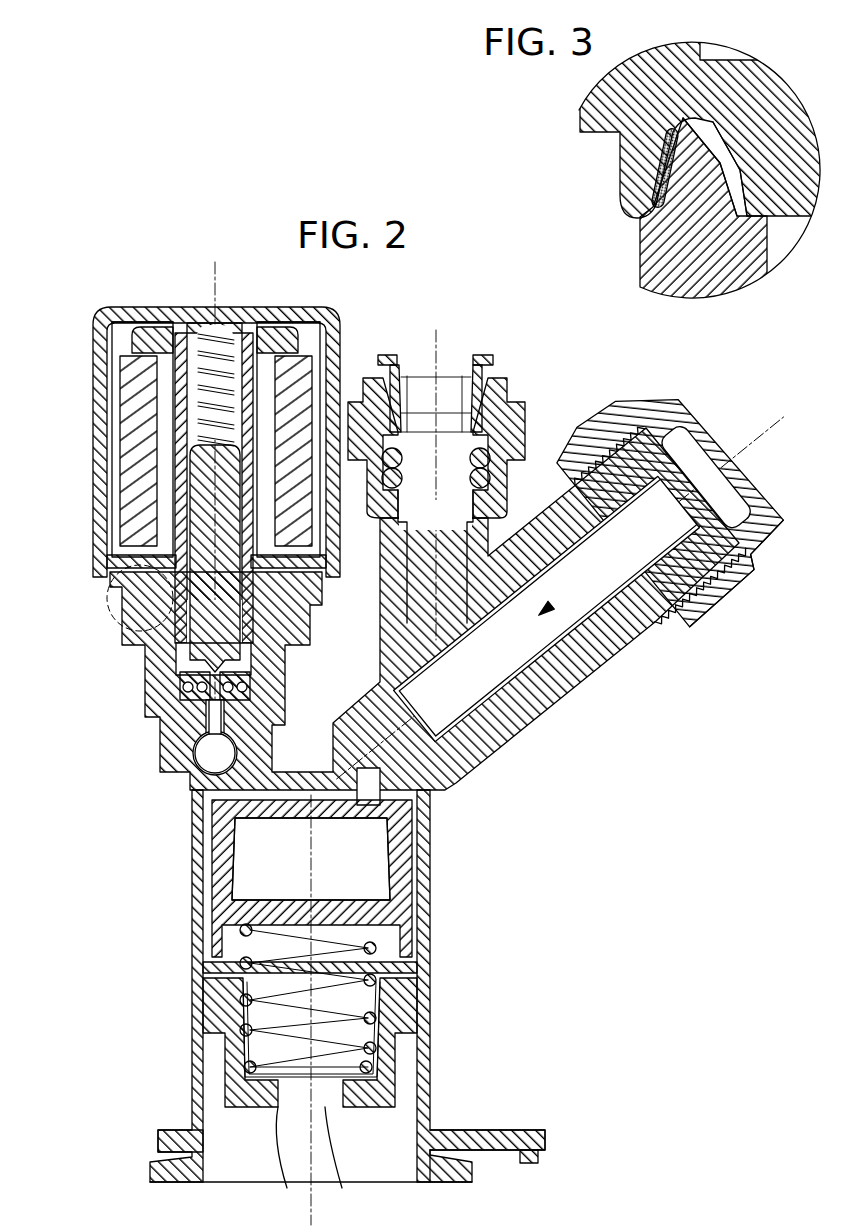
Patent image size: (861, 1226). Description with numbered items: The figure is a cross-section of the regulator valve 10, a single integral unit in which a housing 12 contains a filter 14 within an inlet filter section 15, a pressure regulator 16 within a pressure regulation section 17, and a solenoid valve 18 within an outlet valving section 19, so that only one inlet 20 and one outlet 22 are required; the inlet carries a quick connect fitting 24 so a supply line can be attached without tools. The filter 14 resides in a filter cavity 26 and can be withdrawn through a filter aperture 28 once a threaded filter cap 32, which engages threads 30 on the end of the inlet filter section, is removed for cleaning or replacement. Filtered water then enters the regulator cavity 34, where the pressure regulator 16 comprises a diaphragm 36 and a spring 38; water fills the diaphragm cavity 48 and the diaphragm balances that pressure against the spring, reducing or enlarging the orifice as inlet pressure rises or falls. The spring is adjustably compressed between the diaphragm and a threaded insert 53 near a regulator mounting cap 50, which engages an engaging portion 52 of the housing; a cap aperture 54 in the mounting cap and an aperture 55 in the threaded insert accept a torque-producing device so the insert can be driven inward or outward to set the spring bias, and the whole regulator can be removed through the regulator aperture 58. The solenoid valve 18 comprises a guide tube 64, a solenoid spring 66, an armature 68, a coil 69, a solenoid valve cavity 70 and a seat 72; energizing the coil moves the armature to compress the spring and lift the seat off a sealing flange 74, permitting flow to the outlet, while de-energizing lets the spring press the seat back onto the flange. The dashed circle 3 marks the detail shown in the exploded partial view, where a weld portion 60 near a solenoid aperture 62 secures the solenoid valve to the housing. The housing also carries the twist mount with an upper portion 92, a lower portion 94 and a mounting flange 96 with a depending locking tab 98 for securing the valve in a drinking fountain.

In FIG. 2, the detail view region of FIG. 3 is at (118, 613).
In FIG. 2, the regulator valve 10 is at (490, 252).
In FIG. 2, the housing 12 is at (554, 606).
In FIG. 2, the filter 14 is at (693, 479).
In FIG. 2, the inlet filter section 15 is at (554, 606).
In FIG. 2, the pressure regulator 16 is at (356, 1004).
In FIG. 2, the pressure regulation section 17 is at (368, 1004).
In FIG. 2, the solenoid valve 18 is at (300, 390).
In FIG. 3, the solenoid valve 18 is at (600, 108).
In FIG. 2, the outlet valving section 19 is at (190, 448).
In FIG. 2, the inlet 20 is at (453, 453).
In FIG. 2, the outlet 22 is at (195, 790).
In FIG. 2, the quick connect fitting 24 is at (487, 355).
In FIG. 2, the filter cavity 26 is at (582, 520).
In FIG. 2, the filter aperture 28 is at (706, 512).
In FIG. 2, the threads 30 is at (660, 620).
In FIG. 2, the threaded filter cap 32 is at (770, 523).
In FIG. 2, the regulator cavity 34 is at (408, 966).
In FIG. 2, the diaphragm 36 is at (299, 878).
In FIG. 2, the spring 38 is at (235, 960).
In FIG. 2, the diaphragm cavity 48 is at (360, 850).
In FIG. 2, the regulator mounting cap 50 is at (306, 1039).
In FIG. 2, the engaging portion 52 is at (425, 1000).
In FIG. 2, the threaded insert 53 is at (243, 985).
In FIG. 2, the cap aperture 54 is at (284, 1162).
In FIG. 2, the aperture 55 is at (339, 1162).
In FIG. 2, the regulator aperture 58 is at (420, 1140).
In FIG. 3, the weld portion 60 is at (658, 160).
In FIG. 3, the solenoid aperture 62 is at (692, 114).
In FIG. 2, the guide tube 64 is at (240, 335).
In FIG. 2, the solenoid spring 66 is at (181, 330).
In FIG. 2, the armature 68 is at (210, 500).
In FIG. 2, the coil 69 is at (137, 425).
In FIG. 2, the solenoid valve cavity 70 is at (192, 682).
In FIG. 2, the seat 72 is at (240, 682).
In FIG. 2, the sealing flange 74 is at (200, 722).
In FIG. 2, the upper portion 92 is at (172, 1130).
In FIG. 2, the lower portion 94 is at (445, 1182).
In FIG. 2, the mounting flange 96 is at (548, 1137).
In FIG. 2, the locking tab 98 is at (530, 1163).